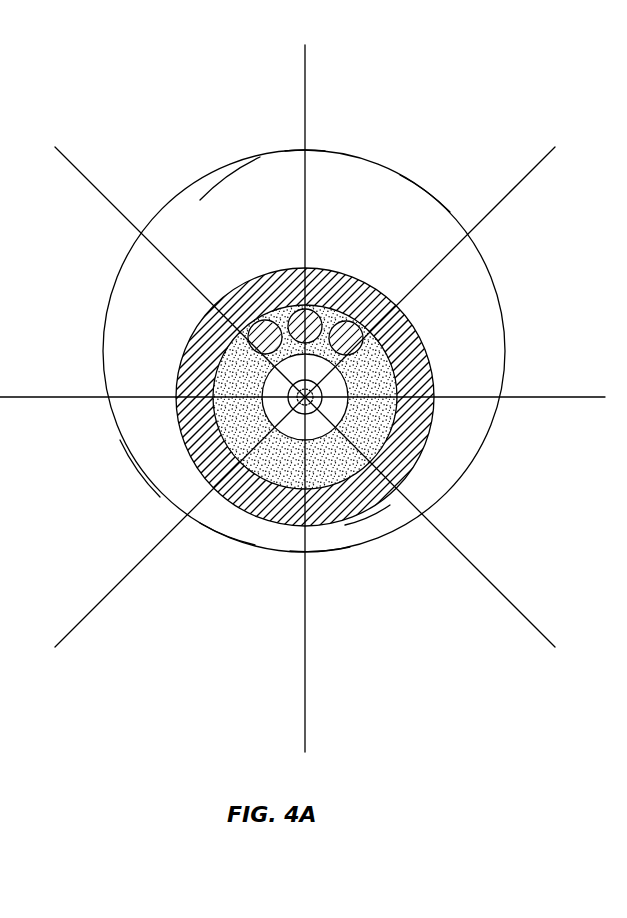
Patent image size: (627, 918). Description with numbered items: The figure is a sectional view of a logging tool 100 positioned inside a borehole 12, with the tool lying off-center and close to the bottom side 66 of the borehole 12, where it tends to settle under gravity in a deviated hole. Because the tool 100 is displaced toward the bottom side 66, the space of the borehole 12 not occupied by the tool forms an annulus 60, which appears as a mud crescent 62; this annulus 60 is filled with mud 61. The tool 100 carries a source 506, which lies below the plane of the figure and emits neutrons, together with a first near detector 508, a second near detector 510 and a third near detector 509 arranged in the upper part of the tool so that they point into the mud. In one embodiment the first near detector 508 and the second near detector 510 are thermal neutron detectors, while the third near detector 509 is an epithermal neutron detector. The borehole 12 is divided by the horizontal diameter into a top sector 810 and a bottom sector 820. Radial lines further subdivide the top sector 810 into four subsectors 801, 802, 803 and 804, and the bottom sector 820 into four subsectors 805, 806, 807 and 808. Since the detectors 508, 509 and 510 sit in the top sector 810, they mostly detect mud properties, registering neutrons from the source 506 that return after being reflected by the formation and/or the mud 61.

The borehole 12 is at (138, 470).
The annulus 60 is at (109, 318).
The mud 61 is at (425, 205).
The mud crescent 62 is at (228, 172).
The bottom side 66 is at (320, 553).
The tool 100 is at (345, 522).
The source 506 is at (305, 397).
The first near detector 508 is at (260, 332).
The third near detector 509 is at (300, 310).
The second near detector 510 is at (352, 325).
The subsector 801 is at (115, 388).
The subsector 802 is at (180, 205).
The subsector 803 is at (318, 158).
The subsector 804 is at (490, 390).
The subsector 805 is at (465, 465).
The subsector 806 is at (365, 532).
The subsector 807 is at (227, 537).
The subsector 808 is at (135, 413).
The top sector 810 is at (279, 221).
The bottom sector 820 is at (277, 579).